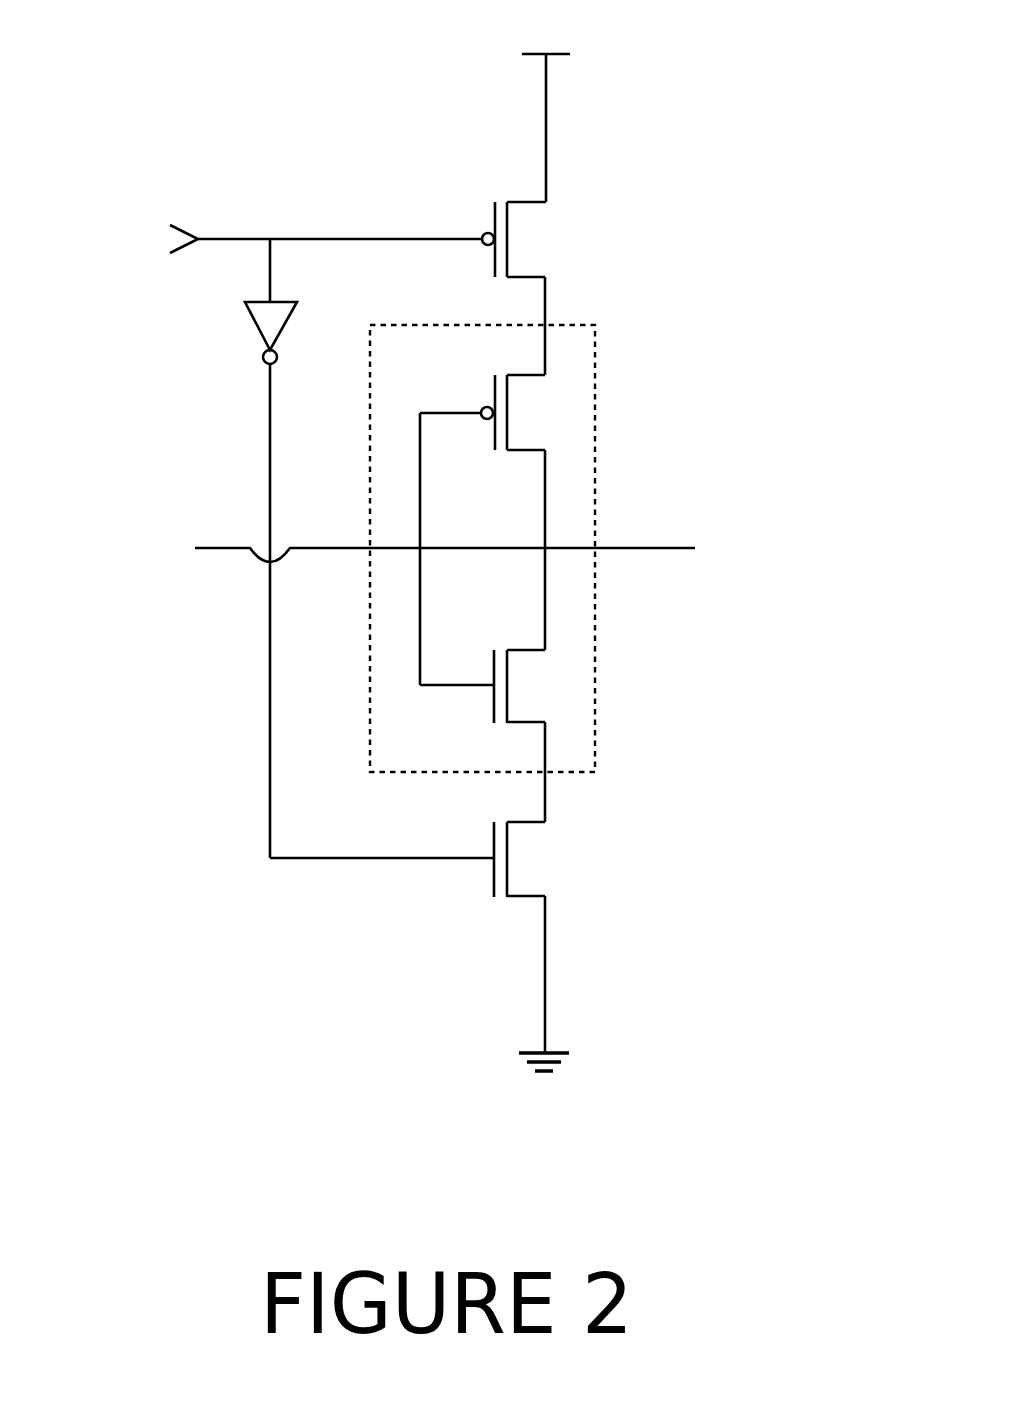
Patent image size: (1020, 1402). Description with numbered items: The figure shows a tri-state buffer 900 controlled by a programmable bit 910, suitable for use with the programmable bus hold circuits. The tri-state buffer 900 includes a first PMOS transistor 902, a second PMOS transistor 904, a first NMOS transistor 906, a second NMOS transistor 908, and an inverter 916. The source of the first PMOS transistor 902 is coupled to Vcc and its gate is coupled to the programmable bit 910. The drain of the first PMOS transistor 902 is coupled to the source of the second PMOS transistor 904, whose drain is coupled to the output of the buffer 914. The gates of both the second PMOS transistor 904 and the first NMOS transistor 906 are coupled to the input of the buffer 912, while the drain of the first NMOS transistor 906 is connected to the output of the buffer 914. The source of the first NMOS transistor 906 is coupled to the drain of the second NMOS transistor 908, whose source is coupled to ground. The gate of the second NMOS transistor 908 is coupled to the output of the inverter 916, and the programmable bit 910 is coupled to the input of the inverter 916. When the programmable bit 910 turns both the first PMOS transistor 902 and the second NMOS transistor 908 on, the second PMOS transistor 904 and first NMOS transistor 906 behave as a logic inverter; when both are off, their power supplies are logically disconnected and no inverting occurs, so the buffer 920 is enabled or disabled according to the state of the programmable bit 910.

The tri-state buffer 900 is at (375, 538).
The first PMOS transistor 902 is at (536, 288).
The second PMOS transistor 904 is at (499, 512).
The first NMOS transistor 906 is at (498, 736).
The second NMOS transistor 908 is at (430, 859).
The programmable bit 910 is at (293, 247).
The input of the buffer 912 is at (351, 549).
The output of the buffer 914 is at (683, 550).
The inverter 916 is at (262, 337).
The buffer 920 is at (595, 375).